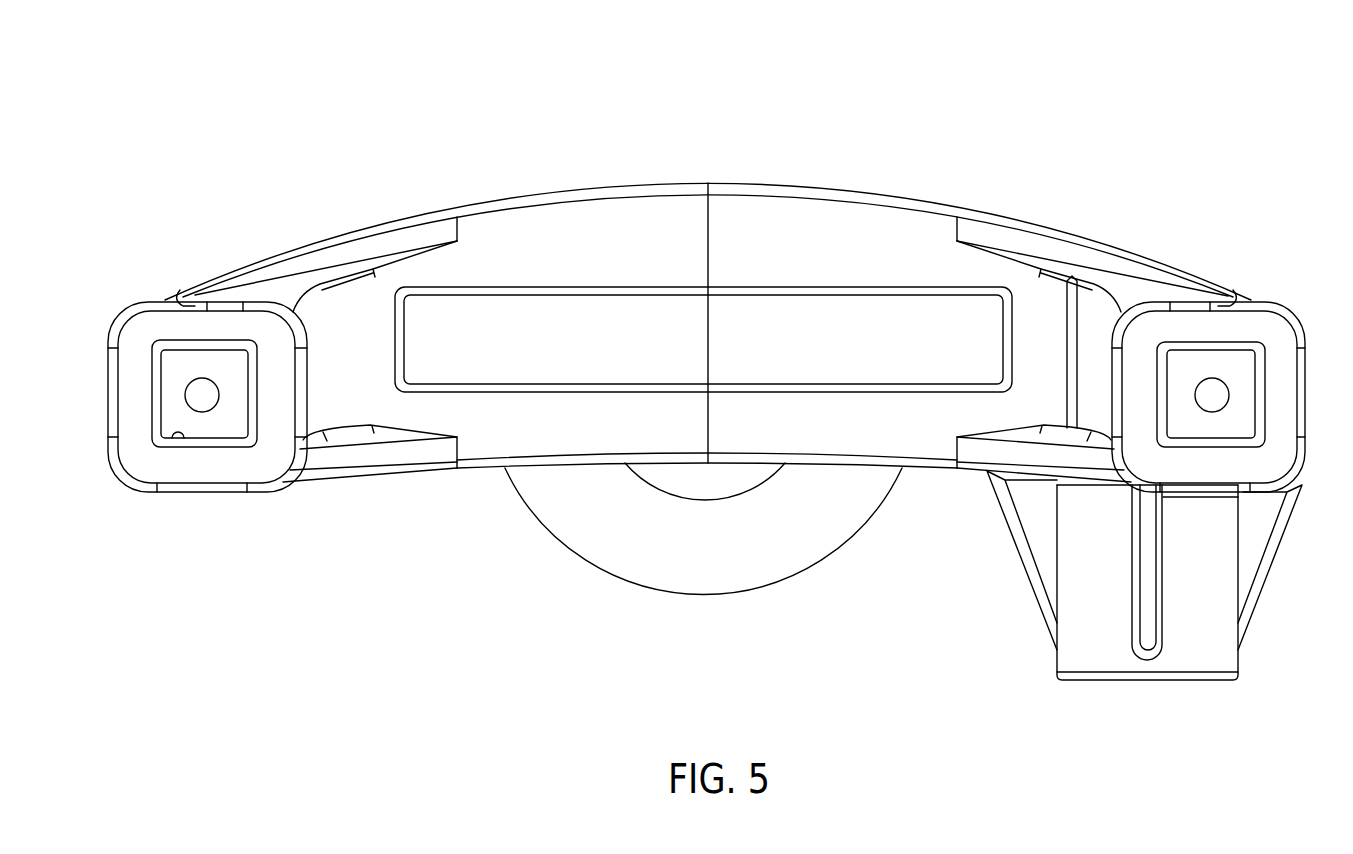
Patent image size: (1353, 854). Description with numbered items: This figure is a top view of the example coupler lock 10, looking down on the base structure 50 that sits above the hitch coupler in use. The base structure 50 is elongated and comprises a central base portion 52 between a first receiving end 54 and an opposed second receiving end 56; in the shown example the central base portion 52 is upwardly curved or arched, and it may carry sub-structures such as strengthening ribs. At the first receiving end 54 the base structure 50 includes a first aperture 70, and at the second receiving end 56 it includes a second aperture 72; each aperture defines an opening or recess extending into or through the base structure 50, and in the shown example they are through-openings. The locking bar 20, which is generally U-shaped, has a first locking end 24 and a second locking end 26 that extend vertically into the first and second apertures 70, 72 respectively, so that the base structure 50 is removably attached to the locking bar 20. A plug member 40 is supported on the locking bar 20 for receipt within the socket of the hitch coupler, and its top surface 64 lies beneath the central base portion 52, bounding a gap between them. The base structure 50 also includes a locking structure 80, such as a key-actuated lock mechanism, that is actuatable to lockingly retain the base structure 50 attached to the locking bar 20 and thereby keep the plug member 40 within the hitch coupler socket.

The coupler lock 10 is at (716, 399).
The base structure 50 is at (708, 294).
The central base portion 52 is at (628, 212).
The first receiving end 54 is at (1227, 378).
The second receiving end 56 is at (198, 411).
The locking bar 20 is at (1213, 355).
The first locking end 24 is at (1250, 383).
The second locking end 26 is at (210, 428).
The second aperture 72 is at (176, 434).
The first aperture 70 is at (1220, 445).
The top surface 64 is at (748, 473).
The plug member 40 is at (622, 600).
The locking structure 80 is at (1077, 684).